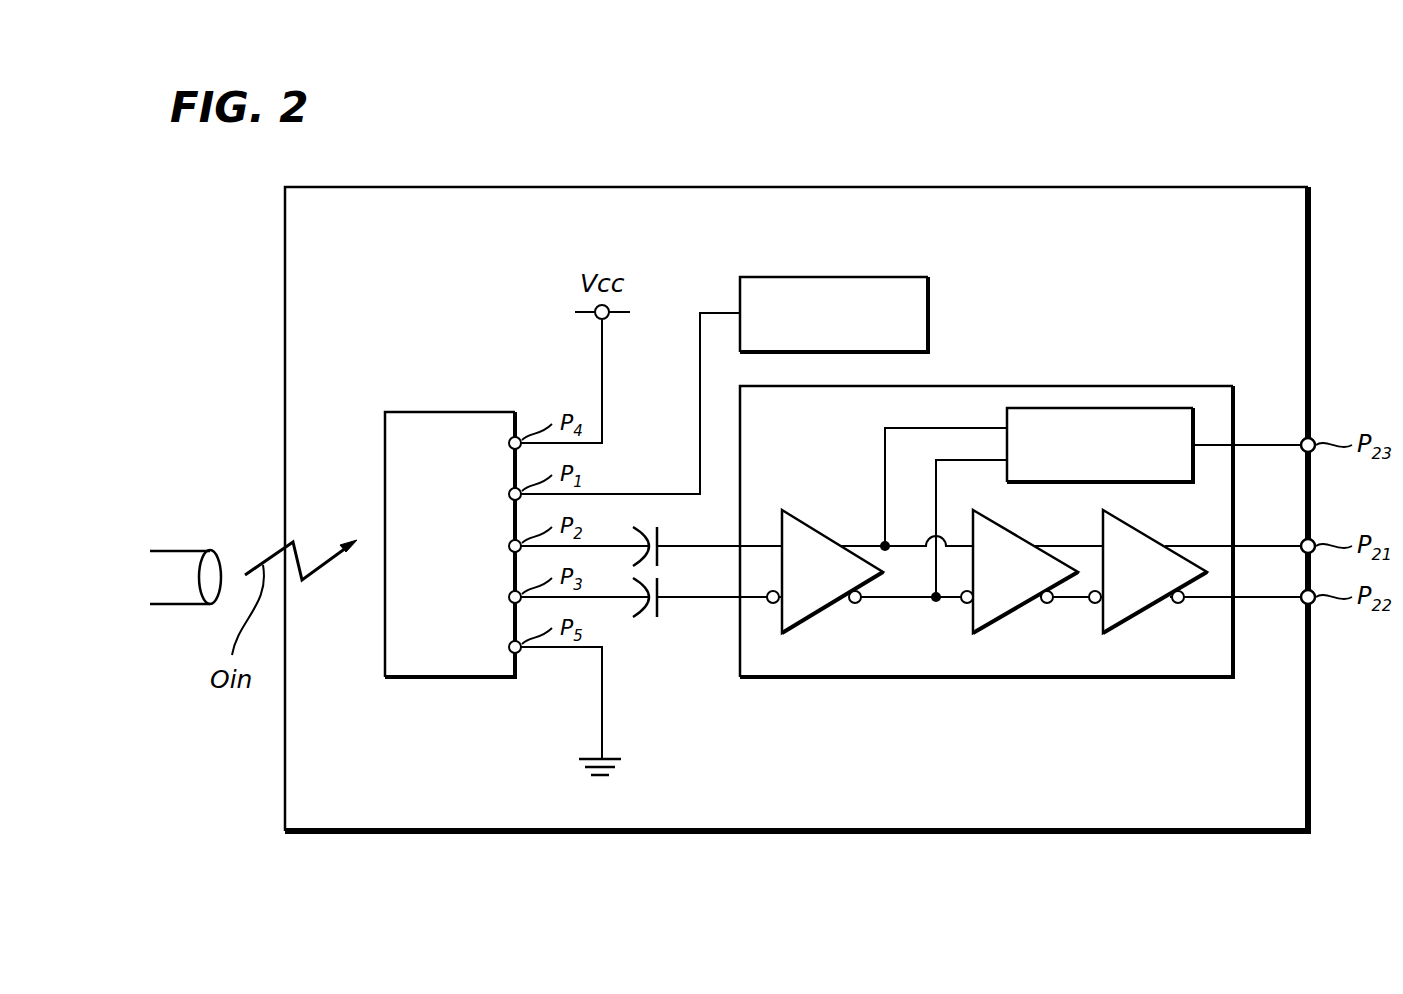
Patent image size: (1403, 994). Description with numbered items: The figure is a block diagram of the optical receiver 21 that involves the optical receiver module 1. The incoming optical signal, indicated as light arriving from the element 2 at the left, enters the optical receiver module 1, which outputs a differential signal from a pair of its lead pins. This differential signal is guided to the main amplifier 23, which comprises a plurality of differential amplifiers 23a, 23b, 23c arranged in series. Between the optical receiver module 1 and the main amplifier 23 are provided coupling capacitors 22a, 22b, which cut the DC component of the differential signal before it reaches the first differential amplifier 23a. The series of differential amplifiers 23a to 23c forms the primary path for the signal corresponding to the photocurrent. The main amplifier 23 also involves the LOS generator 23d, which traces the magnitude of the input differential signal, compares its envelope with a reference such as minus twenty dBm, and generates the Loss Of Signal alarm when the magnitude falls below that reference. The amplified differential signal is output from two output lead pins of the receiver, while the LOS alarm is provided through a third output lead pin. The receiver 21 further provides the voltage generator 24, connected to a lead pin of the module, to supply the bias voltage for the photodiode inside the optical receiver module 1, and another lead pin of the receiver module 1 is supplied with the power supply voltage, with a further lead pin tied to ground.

The optical receiver module 1 is at (485, 410).
The optical fiber / light input 2 is at (185, 550).
The optical receiver 21 is at (1187, 188).
The coupling capacitor 22a is at (662, 532).
The coupling capacitor 22b is at (660, 610).
The main amplifier 23 is at (1024, 550).
The differential amplifier 23a is at (808, 615).
The differential amplifier 23b is at (1005, 617).
The differential amplifier 23c is at (1135, 617).
The LOS generator 23d is at (1153, 407).
The voltage generator 24 is at (930, 297).